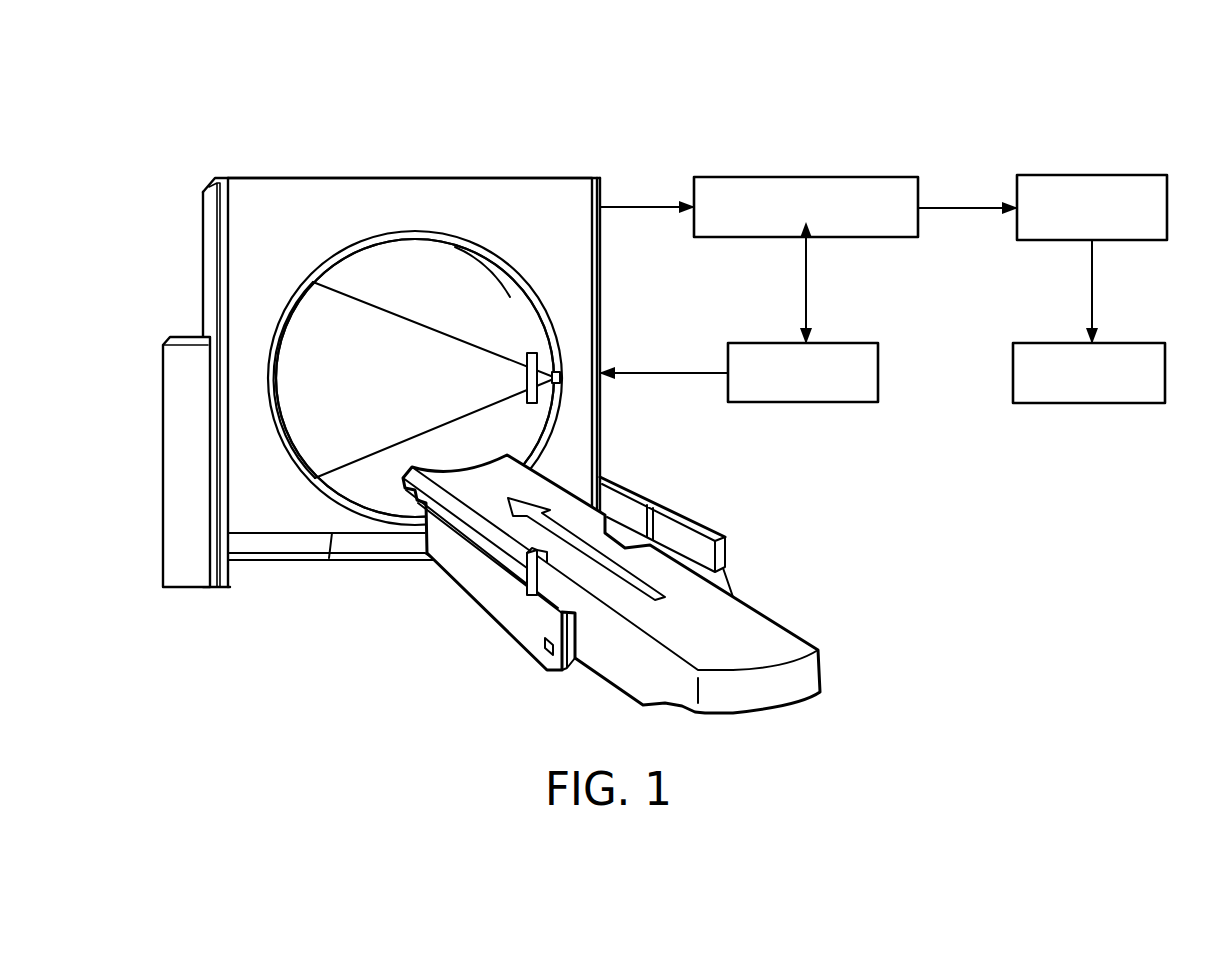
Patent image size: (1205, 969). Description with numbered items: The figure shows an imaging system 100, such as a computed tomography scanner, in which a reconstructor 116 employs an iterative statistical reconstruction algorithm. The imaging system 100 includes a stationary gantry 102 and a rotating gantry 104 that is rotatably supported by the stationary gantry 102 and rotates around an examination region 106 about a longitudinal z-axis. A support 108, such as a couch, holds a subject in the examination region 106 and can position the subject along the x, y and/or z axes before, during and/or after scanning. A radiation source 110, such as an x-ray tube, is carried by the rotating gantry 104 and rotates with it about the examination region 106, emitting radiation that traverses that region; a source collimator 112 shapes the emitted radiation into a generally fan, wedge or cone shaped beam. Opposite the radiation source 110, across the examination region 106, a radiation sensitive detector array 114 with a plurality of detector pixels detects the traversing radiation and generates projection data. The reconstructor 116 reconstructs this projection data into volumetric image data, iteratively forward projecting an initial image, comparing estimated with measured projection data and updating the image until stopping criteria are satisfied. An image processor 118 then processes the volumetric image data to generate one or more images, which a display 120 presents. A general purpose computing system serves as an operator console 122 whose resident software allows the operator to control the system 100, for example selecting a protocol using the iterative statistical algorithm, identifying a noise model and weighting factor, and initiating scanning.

The imaging system 100 is at (172, 135).
The stationary gantry 102 is at (283, 177).
The rotating gantry 104 is at (322, 268).
The examination region 106 is at (412, 391).
The support 108 is at (759, 627).
The radiation source 110 is at (561, 381).
The source collimator 112 is at (530, 352).
The radiation sensitive detector array 114 is at (292, 325).
The reconstructor 116 is at (882, 188).
The image processor 118 is at (1030, 187).
The display 120 is at (1142, 393).
The operator console 122 is at (873, 355).